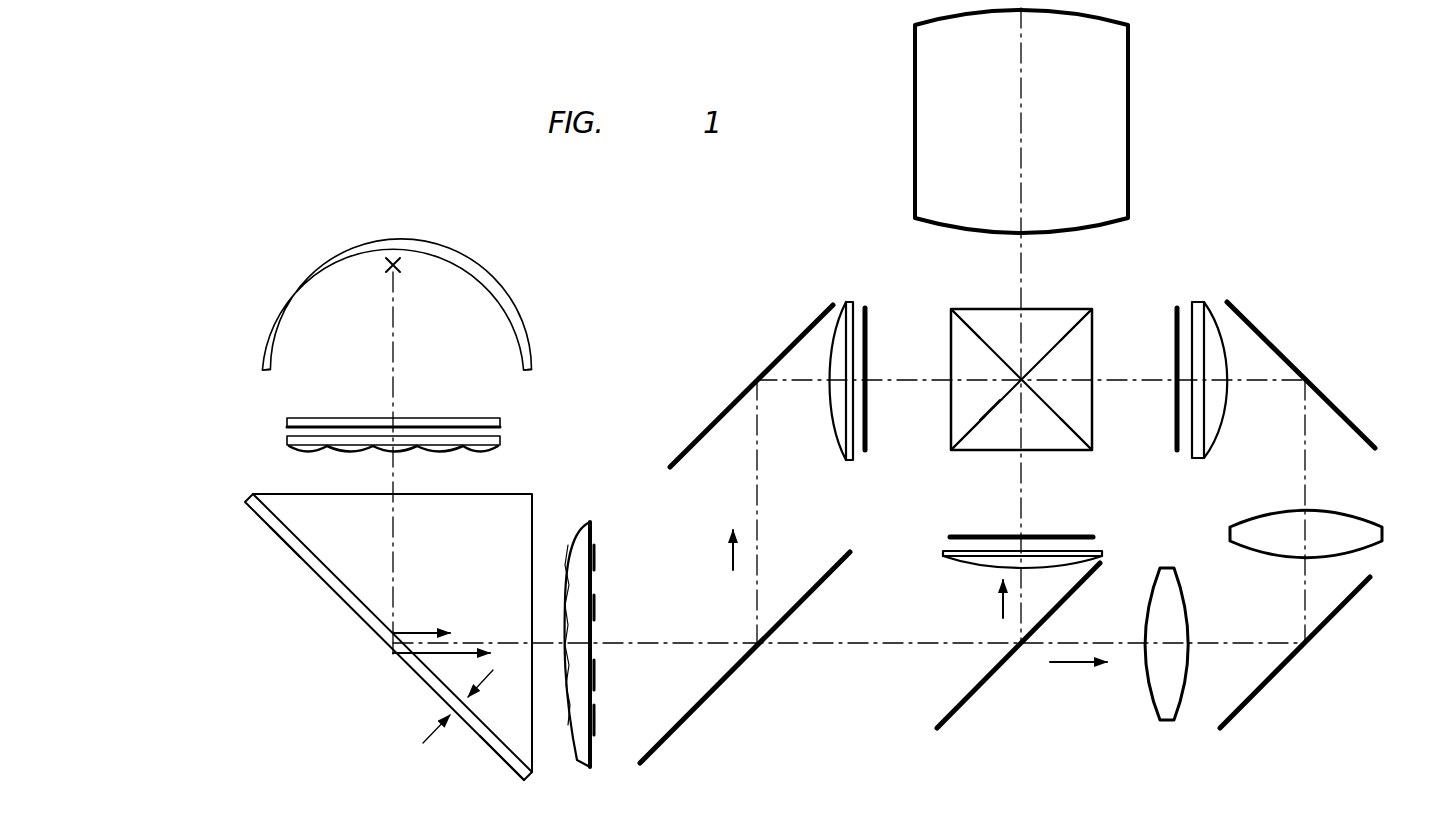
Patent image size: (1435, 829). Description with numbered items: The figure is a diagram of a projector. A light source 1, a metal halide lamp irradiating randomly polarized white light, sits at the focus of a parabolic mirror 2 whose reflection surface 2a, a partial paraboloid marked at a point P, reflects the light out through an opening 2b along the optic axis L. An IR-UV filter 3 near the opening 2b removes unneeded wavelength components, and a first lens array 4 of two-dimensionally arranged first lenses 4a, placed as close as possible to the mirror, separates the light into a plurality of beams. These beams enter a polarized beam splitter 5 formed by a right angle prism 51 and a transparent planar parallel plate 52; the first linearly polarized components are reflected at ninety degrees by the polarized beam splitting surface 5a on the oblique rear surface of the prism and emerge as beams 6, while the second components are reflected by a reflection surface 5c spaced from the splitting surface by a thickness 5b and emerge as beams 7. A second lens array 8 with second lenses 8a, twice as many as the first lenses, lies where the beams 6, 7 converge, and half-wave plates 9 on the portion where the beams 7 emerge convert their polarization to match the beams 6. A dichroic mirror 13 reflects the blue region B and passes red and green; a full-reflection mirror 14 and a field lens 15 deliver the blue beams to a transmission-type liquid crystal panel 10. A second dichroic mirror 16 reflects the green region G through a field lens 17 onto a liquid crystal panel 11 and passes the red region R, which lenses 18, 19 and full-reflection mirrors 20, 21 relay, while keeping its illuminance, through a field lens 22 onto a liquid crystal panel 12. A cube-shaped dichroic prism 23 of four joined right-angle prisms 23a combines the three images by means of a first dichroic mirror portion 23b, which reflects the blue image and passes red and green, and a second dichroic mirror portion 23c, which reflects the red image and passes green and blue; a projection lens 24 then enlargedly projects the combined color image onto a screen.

The light source 1 is at (397, 262).
The parabolic mirror 2 is at (476, 278).
The reflection surface 2a is at (280, 364).
The opening 2b is at (527, 373).
The IR-UV filter 3 is at (503, 419).
The first lens array 4 is at (503, 446).
The first lenses 4a is at (298, 452).
The polarized beam splitter 5 is at (535, 500).
The right angle prism 51 is at (420, 490).
The planar parallel plate 52 is at (295, 549).
The polarized beam splitting surface 5a is at (530, 758).
The thickness 5b is at (441, 723).
The reflection surface 5c is at (493, 760).
The beams of first linearly polarized light components 6 is at (396, 631).
The beams of second linearly polarized light components 7 is at (440, 657).
The second lens array 8 is at (588, 522).
The second lenses 8a is at (567, 550).
The half-wave plates 9 is at (598, 556).
The liquid crystal panel 10 is at (864, 305).
The liquid crystal panel 11 is at (1095, 536).
The liquid crystal panel 12 is at (1175, 306).
The dichroic mirror 13 is at (684, 722).
The full-reflection mirror 14 is at (725, 412).
The field lens 15 is at (838, 440).
The dichroic mirror 16 is at (968, 697).
The field lens 17 is at (1105, 553).
The lens 18 is at (1192, 610).
The lens 19 is at (1365, 520).
The full-reflection mirror 20 is at (1278, 678).
The full-reflection mirror 21 is at (1290, 360).
The field lens 22 is at (1200, 300).
The dichroic prism 23 is at (1065, 308).
The right-angle prisms 23a is at (965, 440).
The first dichroic mirror portion 23b is at (1058, 348).
The second dichroic mirror portion 23c is at (972, 320).
The projection lens 24 is at (1130, 80).
The reflector surface point P is at (353, 240).
The optic axis L is at (397, 290).
The blue B is at (732, 572).
The green G is at (986, 601).
The red R is at (1078, 682).